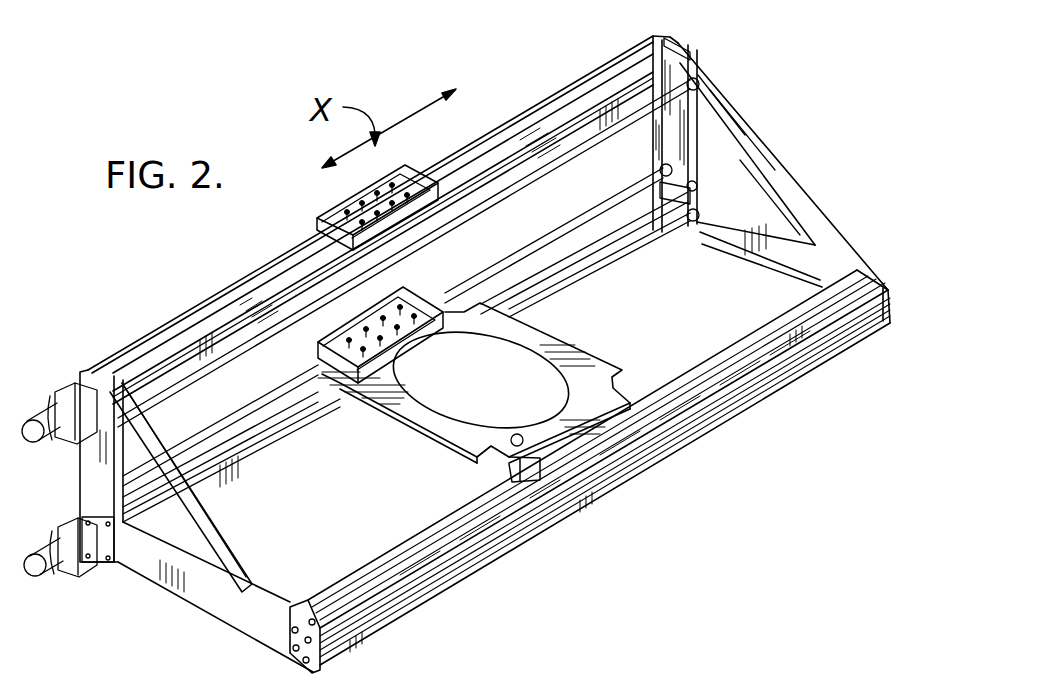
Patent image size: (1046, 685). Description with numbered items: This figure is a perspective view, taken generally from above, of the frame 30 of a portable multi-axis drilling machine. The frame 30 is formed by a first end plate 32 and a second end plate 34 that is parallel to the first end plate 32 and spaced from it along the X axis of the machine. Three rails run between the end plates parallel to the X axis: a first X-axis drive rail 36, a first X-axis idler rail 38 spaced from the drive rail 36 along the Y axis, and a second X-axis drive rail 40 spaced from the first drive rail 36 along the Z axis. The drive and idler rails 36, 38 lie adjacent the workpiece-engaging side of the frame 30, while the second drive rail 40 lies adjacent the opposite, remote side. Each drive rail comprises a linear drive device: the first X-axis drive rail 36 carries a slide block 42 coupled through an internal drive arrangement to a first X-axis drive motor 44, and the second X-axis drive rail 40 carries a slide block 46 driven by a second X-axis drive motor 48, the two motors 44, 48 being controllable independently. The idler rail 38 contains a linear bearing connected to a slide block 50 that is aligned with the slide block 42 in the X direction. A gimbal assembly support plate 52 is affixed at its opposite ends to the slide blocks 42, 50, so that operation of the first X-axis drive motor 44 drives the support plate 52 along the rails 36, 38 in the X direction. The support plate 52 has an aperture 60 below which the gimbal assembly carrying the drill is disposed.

The frame 30 is at (733, 78).
The first end plate 32 is at (248, 543).
The second end plate 34 is at (758, 133).
The first X-axis drive rail 36 is at (627, 242).
The first X-axis idler rail 38 is at (640, 463).
The second X-axis drive rail 40 is at (187, 322).
The slide block 42 is at (313, 358).
The first X-axis drive motor 44 is at (65, 575).
The slide block 46 is at (315, 232).
The second X-axis drive motor 48 is at (55, 417).
The slide block 50 is at (512, 470).
The gimbal assembly support plate 52 is at (410, 433).
The aperture 60 is at (548, 382).